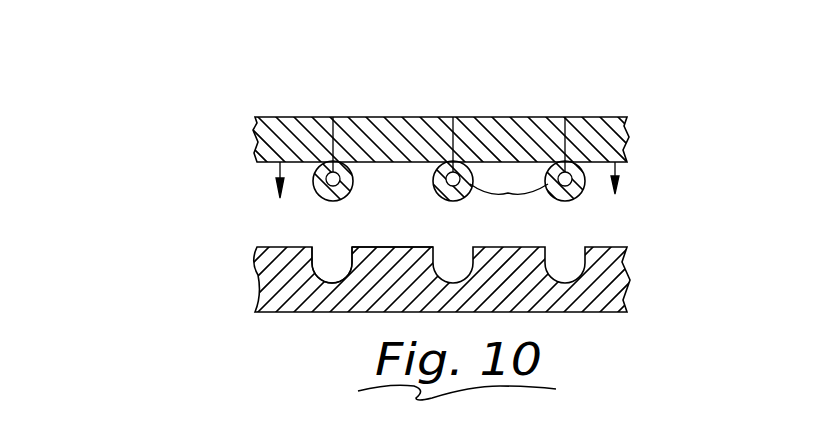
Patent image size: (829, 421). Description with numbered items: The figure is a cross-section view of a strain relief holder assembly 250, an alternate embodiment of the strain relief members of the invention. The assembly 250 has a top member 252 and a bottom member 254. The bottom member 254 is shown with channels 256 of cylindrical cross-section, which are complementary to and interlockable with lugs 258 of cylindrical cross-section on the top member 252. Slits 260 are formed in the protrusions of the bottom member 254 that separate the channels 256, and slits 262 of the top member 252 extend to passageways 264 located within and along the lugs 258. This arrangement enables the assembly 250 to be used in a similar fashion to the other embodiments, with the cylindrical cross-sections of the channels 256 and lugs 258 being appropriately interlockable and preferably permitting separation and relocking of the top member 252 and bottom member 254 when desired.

The strain relief holder assembly 250 is at (445, 133).
The top member 252 is at (591, 133).
The bottom member 254 is at (606, 262).
The channels 256 is at (330, 268).
The lugs 258 is at (555, 199).
The slits 260 is at (385, 263).
The slits 262 is at (333, 135).
The passageways 264 is at (509, 206).